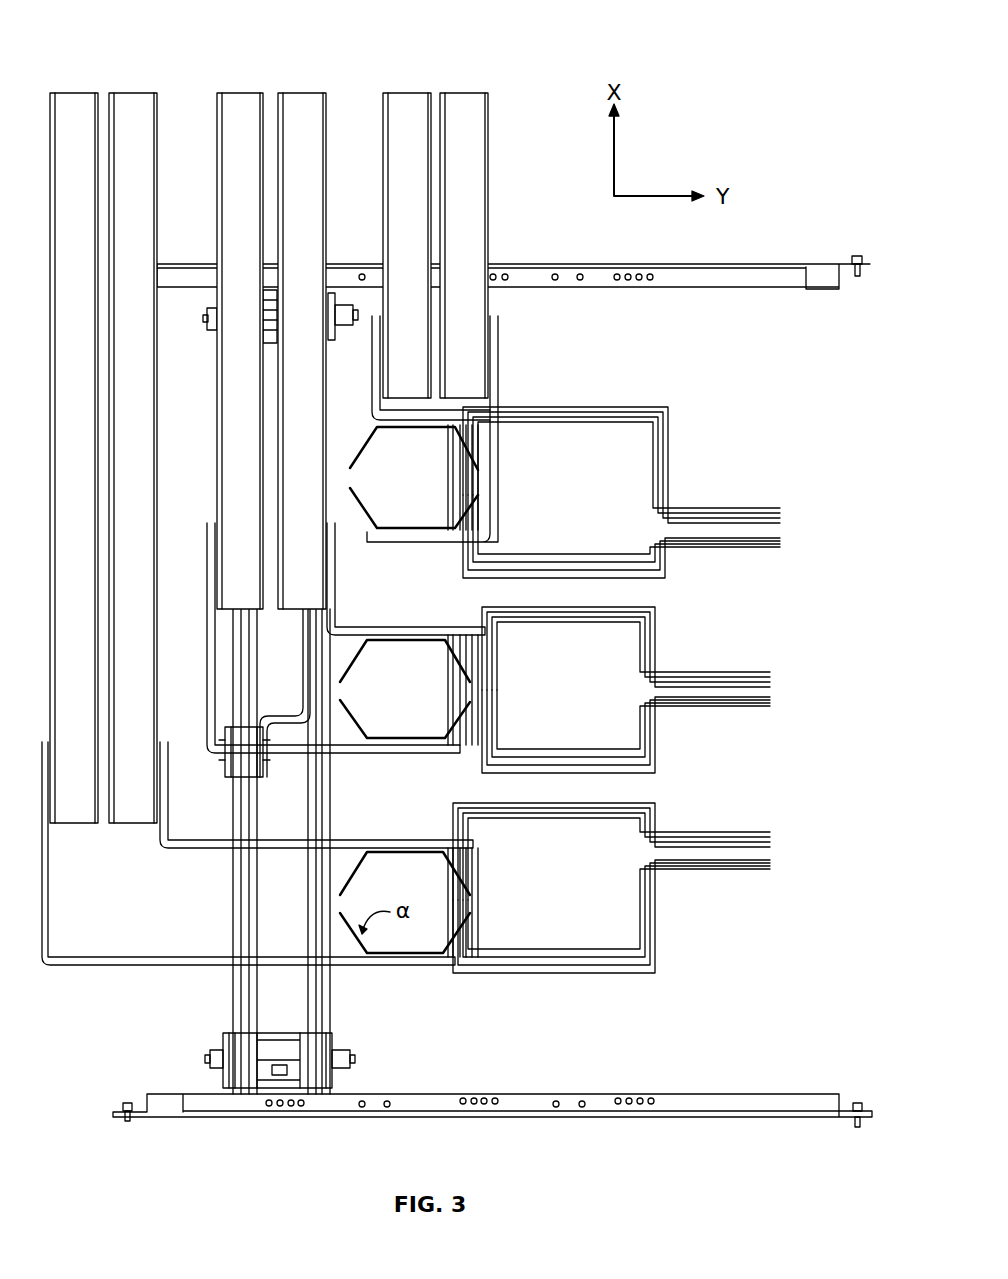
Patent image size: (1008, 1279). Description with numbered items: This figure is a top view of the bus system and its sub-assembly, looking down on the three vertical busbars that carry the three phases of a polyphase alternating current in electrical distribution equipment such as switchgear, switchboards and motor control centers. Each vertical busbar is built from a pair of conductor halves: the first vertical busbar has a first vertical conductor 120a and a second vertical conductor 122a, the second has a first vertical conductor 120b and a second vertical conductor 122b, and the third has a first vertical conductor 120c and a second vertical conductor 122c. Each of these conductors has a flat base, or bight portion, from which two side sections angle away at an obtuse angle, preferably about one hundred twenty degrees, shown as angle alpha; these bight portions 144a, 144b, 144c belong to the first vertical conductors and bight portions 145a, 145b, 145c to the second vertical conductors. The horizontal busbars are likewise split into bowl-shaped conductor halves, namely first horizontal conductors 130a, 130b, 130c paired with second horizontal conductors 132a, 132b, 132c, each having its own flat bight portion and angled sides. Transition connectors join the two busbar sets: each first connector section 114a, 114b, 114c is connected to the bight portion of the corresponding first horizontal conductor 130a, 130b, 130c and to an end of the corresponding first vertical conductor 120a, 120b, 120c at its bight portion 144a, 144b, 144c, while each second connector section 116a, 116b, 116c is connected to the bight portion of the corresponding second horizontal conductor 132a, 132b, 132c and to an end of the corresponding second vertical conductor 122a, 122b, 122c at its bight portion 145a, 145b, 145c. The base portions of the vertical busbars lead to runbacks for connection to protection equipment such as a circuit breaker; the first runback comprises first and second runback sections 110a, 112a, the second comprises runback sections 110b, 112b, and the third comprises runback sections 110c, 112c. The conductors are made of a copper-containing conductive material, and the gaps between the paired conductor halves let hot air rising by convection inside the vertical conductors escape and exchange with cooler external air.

The first runback section 110a is at (760, 507).
The second runback section 112a is at (760, 548).
The first runback section 110b is at (760, 677).
The second runback section 112b is at (760, 707).
The first runback section 110c is at (760, 832).
The second runback section 112c is at (760, 870).
The first connector section 114a is at (380, 328).
The first connector section 114b is at (400, 627).
The first connector section 114c is at (435, 835).
The second connector section 116a is at (500, 352).
The second connector section 116b is at (340, 758).
The second connector section 116c is at (77, 968).
The first vertical conductor 120a is at (480, 468).
The first vertical conductor 120b is at (470, 680).
The first vertical conductor 120c is at (470, 893).
The second vertical conductor 122a is at (480, 490).
The second vertical conductor 122b is at (470, 703).
The second vertical conductor 122c is at (470, 915).
The first horizontal conductor 130a is at (408, 92).
The first horizontal conductor 130b is at (298, 92).
The first horizontal conductor 130c is at (132, 92).
The second horizontal conductor 132a is at (460, 92).
The second horizontal conductor 132b is at (240, 92).
The second horizontal conductor 132c is at (74, 92).
The bight portion 144a is at (420, 945).
The bight portion 144b is at (413, 738).
The bight portion 144c is at (413, 530).
The bight portion 145a is at (415, 852).
The bight portion 145b is at (415, 640).
The bight portion 145c is at (415, 427).